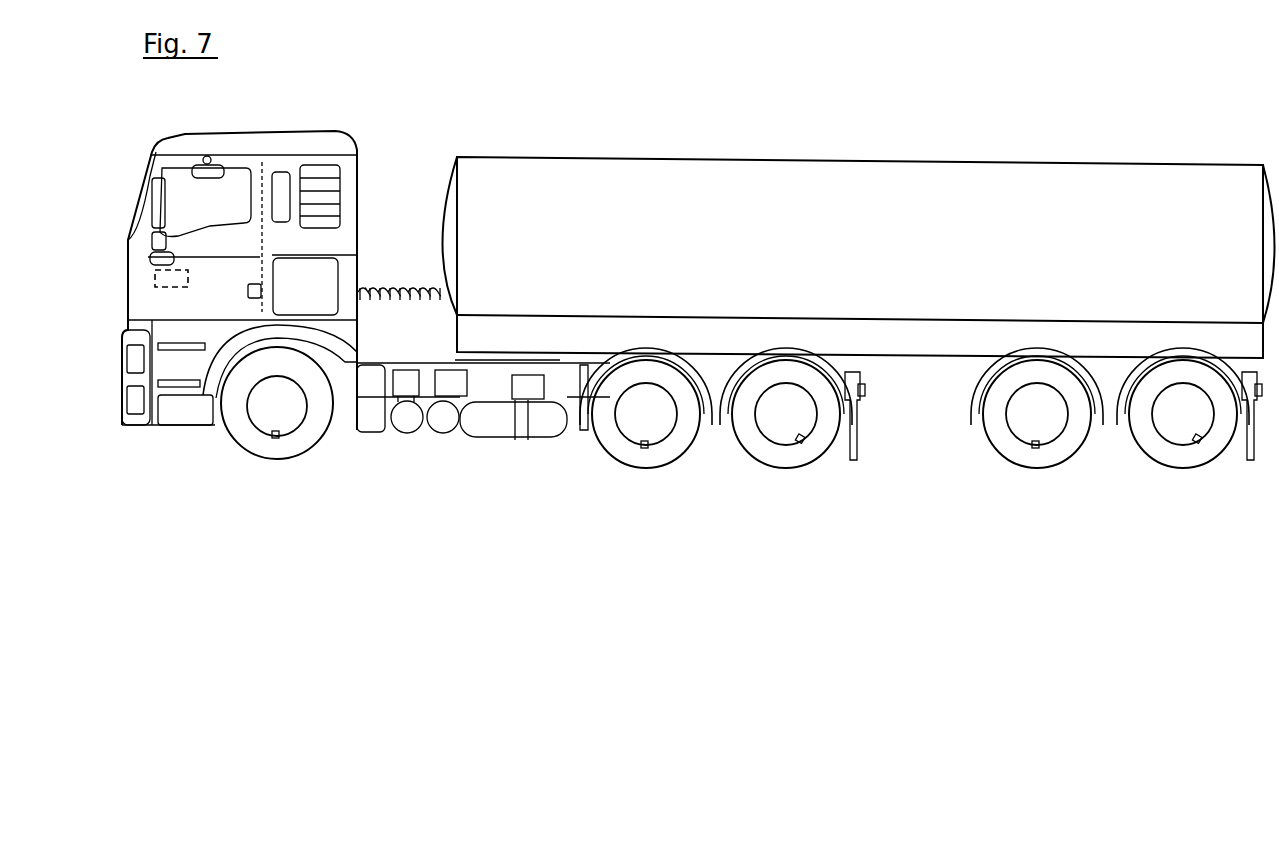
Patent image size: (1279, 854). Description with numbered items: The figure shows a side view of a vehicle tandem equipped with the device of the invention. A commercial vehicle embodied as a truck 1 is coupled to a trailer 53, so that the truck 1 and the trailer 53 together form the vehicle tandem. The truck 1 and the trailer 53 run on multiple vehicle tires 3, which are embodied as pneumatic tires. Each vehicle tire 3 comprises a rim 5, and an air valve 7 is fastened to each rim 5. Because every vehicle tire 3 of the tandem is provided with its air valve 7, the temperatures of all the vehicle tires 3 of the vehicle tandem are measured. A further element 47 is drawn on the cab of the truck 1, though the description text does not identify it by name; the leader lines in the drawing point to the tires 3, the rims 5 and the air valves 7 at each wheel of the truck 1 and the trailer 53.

The truck 1 is at (303, 124).
The vehicle tire 3 is at (228, 467).
The rim 5 is at (292, 410).
The air valve 7 is at (279, 440).
The control unit 47 is at (150, 281).
The trailer 53 is at (787, 145).